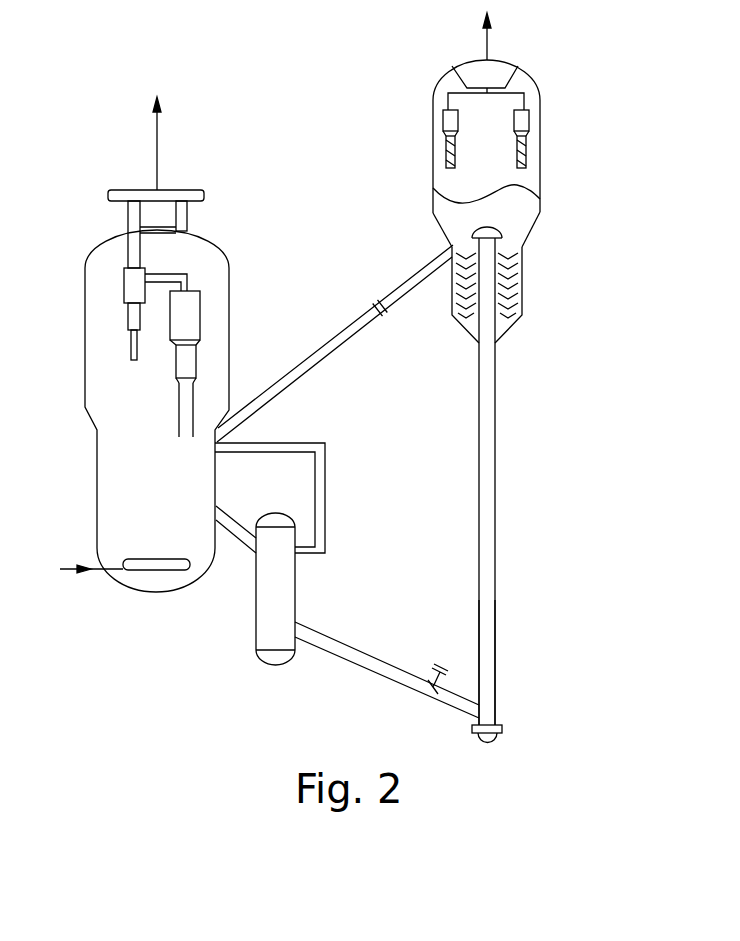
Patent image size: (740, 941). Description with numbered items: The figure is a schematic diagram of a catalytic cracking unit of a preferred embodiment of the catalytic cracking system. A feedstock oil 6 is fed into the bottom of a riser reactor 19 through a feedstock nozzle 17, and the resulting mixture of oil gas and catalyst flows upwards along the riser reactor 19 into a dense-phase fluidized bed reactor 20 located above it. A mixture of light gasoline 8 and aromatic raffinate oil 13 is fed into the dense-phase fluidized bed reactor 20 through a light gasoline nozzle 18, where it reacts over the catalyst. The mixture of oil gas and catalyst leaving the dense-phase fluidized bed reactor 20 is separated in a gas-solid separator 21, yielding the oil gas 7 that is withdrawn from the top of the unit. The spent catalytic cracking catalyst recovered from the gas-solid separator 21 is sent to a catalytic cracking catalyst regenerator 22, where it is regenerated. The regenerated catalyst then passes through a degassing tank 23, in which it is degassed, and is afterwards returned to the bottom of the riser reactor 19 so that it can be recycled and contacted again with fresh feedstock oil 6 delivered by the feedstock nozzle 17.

The feedstock oil 6 is at (497, 668).
The oil gas 7 is at (498, 36).
The light gasoline 8 is at (538, 216).
The aromatic raffinate oil 13 is at (526, 295).
The feedstock nozzle 17 is at (416, 682).
The light gasoline nozzle 18 is at (510, 207).
The riser reactor 19 is at (509, 481).
The dense-phase fluidized bed reactor 20 is at (503, 213).
The gas-solid separator 21 is at (486, 127).
The catalytic cracking catalyst regenerator 22 is at (256, 344).
The degassing tank 23 is at (278, 554).